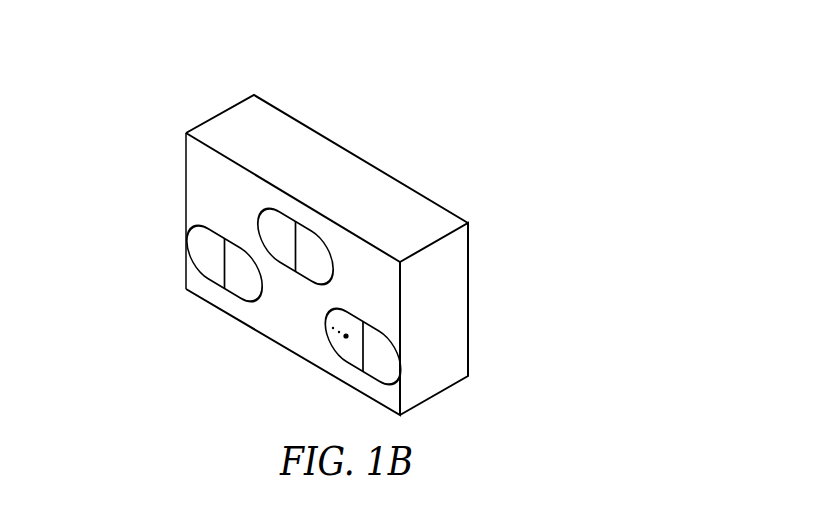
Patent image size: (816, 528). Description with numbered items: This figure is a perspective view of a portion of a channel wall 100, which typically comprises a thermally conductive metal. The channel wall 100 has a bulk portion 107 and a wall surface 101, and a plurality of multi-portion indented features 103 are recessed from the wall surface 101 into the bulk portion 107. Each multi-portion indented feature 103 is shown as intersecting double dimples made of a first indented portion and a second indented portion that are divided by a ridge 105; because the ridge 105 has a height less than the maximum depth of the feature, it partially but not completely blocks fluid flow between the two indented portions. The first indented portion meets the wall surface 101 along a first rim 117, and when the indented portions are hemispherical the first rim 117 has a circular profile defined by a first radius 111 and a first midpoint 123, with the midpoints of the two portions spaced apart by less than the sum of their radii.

The channel wall 100 is at (346, 213).
The wall surface 101 is at (365, 270).
The multi-portion indented features 103 is at (190, 212).
The ridge 105 is at (292, 232).
The bulk portion 107 is at (445, 277).
The first radius 111 is at (334, 333).
The first rim 117 is at (188, 268).
The first midpoint 123 is at (346, 338).